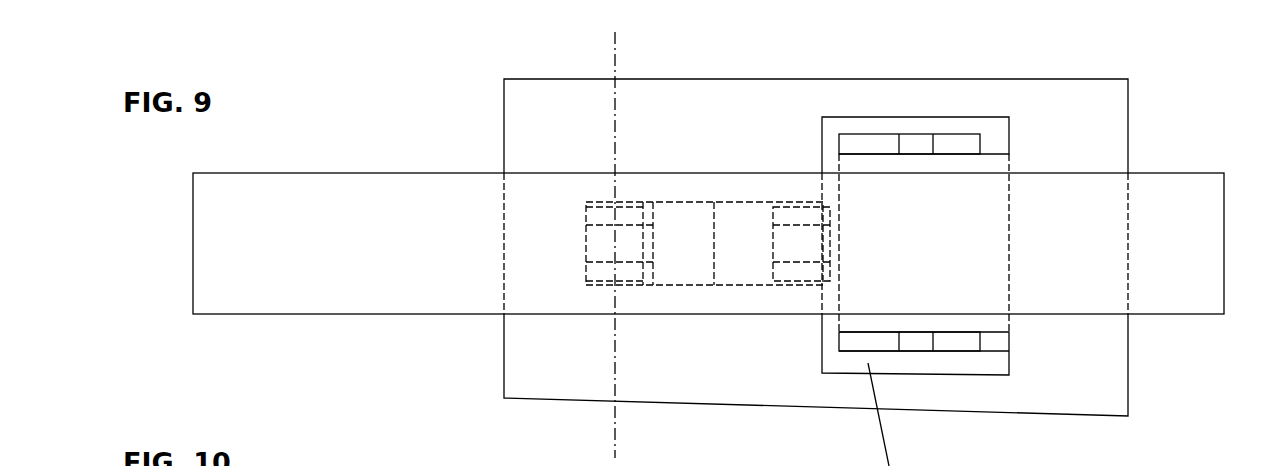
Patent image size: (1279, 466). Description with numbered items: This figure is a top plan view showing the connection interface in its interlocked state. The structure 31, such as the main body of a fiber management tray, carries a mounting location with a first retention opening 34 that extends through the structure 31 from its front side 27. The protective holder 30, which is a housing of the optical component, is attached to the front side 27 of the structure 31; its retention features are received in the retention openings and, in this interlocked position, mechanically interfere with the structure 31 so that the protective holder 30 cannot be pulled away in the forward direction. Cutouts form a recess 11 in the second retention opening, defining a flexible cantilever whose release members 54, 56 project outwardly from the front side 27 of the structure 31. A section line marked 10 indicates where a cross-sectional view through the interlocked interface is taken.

The section line 10- 10 is at (610, 38).
The recess 11 is at (913, 126).
The front side 27 is at (575, 130).
The protective holder 30 is at (1173, 172).
The structure 31 is at (839, 72).
The first retention opening 34 is at (739, 190).
The release member 54 is at (960, 343).
The release member 56 is at (968, 148).